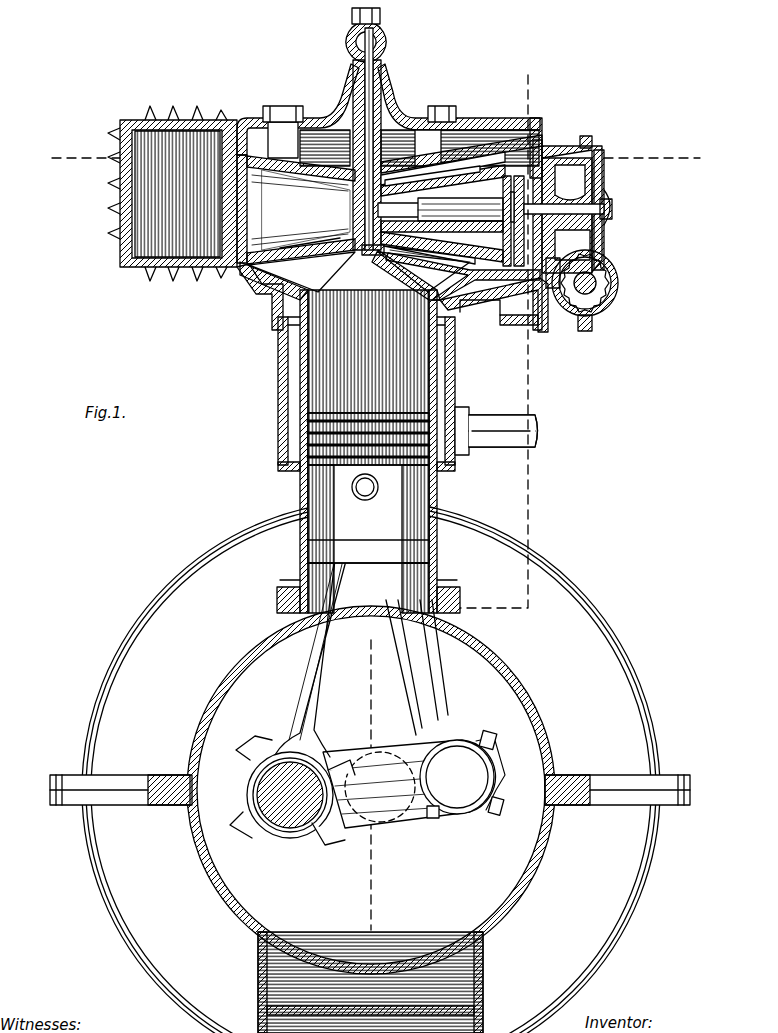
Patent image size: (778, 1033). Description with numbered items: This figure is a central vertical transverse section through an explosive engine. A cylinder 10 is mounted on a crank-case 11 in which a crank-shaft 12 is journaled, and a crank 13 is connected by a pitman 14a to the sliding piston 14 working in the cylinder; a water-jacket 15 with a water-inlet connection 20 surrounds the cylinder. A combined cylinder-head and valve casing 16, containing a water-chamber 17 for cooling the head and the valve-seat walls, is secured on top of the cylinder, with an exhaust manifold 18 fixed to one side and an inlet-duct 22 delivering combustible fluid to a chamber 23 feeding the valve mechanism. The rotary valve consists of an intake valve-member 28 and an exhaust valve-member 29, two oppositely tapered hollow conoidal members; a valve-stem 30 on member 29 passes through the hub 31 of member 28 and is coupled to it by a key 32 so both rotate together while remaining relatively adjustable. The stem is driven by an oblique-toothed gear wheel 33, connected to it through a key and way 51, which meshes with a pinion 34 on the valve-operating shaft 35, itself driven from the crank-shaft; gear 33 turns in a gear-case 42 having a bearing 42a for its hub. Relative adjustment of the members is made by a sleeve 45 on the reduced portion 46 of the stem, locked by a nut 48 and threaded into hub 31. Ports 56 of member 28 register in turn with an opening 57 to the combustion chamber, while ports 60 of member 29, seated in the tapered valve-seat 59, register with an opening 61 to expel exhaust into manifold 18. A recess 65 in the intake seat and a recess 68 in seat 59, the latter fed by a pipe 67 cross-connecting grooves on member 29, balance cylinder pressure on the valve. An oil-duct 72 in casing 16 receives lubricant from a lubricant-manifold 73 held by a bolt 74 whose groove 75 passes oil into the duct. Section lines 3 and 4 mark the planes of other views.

The section line 3— 3 is at (495, 331).
The section line 4— 4 is at (365, 160).
The cylinder 10 is at (440, 489).
The crank-case 11 is at (520, 683).
The crank-shaft 12 is at (370, 785).
The crank 13 is at (452, 820).
The piston 14 is at (368, 513).
The pitman 14a is at (320, 698).
The water-jacket 15 is at (452, 374).
The combined cylinder-head and valve casing 16 is at (510, 128).
The water-chamber 17 is at (405, 140).
The exhaust manifold 18 is at (150, 192).
The water-inlet connection 20 is at (485, 423).
The inlet-duct 22 is at (510, 318).
The chamber 23 is at (552, 142).
The intake valve-member 28 is at (460, 264).
The exhaust valve-member 29 is at (306, 210).
The valve-stem 30 is at (300, 217).
The hub 31 is at (445, 240).
The key 32 is at (370, 252).
The oblique-toothed gear wheel 33 is at (600, 152).
The oblique-toothed pinion 34 is at (612, 303).
The valve-operating shaft 35 is at (598, 283).
The gear-case 42 is at (606, 236).
The bearing 42a is at (590, 140).
The sleeve 45 is at (470, 170).
The reduced portion 46 is at (440, 215).
The nut 48 is at (515, 221).
The key and way 51 is at (610, 202).
The port 56 is at (464, 140).
The opening 57 is at (398, 277).
The valve-seat 59 is at (248, 250).
The port 60 is at (278, 250).
The opening 61 is at (296, 250).
The recess 65 is at (455, 128).
The pipe 67 is at (310, 236).
The recess 68 is at (272, 140).
The oil-duct 72 is at (380, 108).
The lubricant-manifold 73 is at (388, 46).
The bolt 74 is at (350, 26).
The groove 75 is at (345, 52).